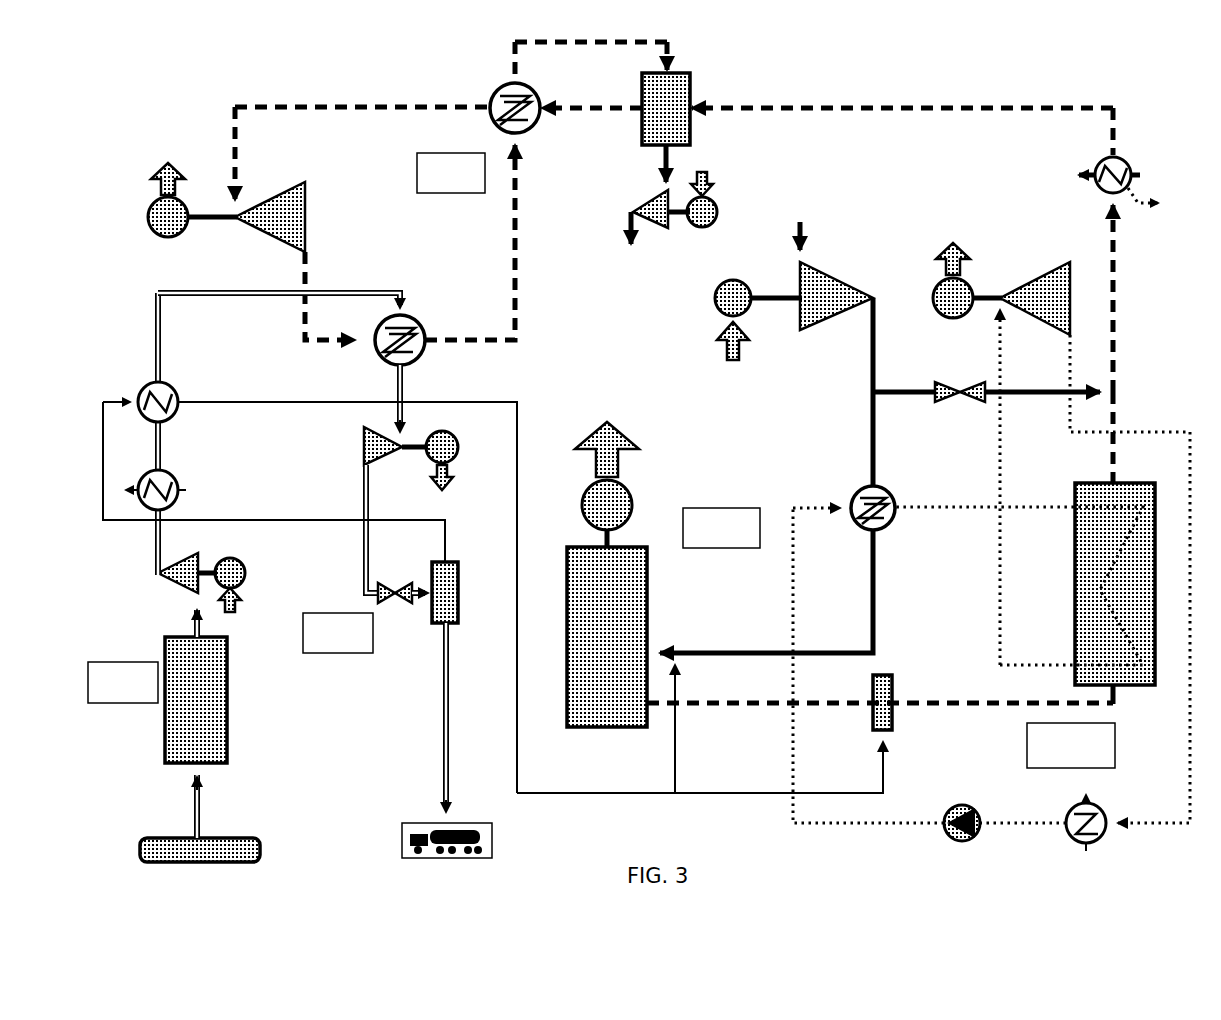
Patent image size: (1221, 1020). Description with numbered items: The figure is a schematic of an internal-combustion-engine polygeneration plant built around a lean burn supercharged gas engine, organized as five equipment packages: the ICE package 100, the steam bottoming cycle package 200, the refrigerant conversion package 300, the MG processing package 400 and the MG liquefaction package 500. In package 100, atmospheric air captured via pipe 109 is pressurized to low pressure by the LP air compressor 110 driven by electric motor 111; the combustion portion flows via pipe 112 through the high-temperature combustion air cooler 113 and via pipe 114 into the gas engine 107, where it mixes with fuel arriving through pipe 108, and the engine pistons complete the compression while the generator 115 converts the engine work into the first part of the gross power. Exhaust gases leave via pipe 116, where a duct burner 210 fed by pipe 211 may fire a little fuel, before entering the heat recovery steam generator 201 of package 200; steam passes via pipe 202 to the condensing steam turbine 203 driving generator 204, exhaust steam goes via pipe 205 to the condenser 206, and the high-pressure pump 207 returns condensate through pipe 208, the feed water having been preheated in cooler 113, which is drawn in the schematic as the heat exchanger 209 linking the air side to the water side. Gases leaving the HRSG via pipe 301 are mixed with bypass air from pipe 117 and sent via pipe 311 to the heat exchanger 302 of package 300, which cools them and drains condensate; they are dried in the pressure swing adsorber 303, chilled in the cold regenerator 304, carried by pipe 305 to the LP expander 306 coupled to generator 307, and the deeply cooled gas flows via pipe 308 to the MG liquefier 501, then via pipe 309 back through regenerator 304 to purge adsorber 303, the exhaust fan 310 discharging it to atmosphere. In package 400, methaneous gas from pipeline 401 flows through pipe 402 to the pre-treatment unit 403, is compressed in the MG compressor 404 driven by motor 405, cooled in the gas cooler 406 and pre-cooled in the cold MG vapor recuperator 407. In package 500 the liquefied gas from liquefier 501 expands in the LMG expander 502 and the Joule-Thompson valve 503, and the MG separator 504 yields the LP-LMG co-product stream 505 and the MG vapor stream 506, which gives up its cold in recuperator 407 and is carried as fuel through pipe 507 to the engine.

The ICE package 100 is at (721, 528).
The gas engine 107 is at (650, 560).
The fuel pipe 108 is at (672, 750).
The air intake pipe 109 is at (803, 252).
The LP air compressor 110 is at (802, 330).
The electric motor 111 is at (716, 310).
The combustion air pipe 112 is at (867, 440).
The high-temperature combustion air cooler 113 is at (853, 502).
The cooled combustion air pipe 114 is at (687, 650).
The generator 115 is at (625, 492).
The exhaust gas pipe 116 is at (751, 707).
The bypass air pipe 117 is at (917, 396).
The steam bottoming cycle package 200 is at (1071, 745).
The heat recovery steam generator 201 is at (1142, 688).
The steam pipe 202 is at (1000, 618).
The condensing steam turbine 203 is at (1042, 280).
The electric generator 204 is at (956, 316).
The exhaust steam pipe 205 is at (1074, 436).
The condenser 206 is at (1099, 808).
The high-pressure pump 207 is at (961, 807).
The condensate pipe 208 is at (792, 823).
The heat exchanger 209 is at (901, 500).
The duct burner 210 is at (893, 686).
The supplementary fuel pipe 211 is at (885, 776).
The refrigerant conversion package 300 is at (451, 173).
The HRSG exhaust pipe 301 is at (1118, 420).
The heat exchanger 302 is at (1128, 160).
The pressure swing adsorber 303 is at (694, 82).
The cold regenerator 304 is at (498, 94).
The chilled gas pipe 305 is at (340, 110).
The LP expander 306 is at (305, 212).
The generator 307 is at (164, 240).
The refrigerant pipe 308 is at (336, 342).
The liquefier exhaust pipe 309 is at (526, 271).
The exhaust fan 310 is at (632, 204).
The LP gaseous stream pipe 311 is at (1120, 290).
The MG processing package 400 is at (123, 682).
The pipeline 401 is at (258, 842).
The MG feed pipe 402 is at (189, 815).
The pre-treatment unit 403 is at (230, 722).
The MG compressor 404 is at (171, 586).
The motor 405 is at (244, 567).
The gas cooler 406 is at (179, 476).
The cold MG vapor recuperator 407 is at (142, 382).
The MG liquefaction package 500 is at (338, 633).
The MG liquefier 501 is at (417, 320).
The LMG expander 502 is at (364, 448).
The Joule-Thompson valve 503 is at (389, 584).
The MG separator 504 is at (458, 620).
The LP-LMG co-product stream 505 is at (446, 702).
The MG vapor stream 506 is at (445, 531).
The fuel pipe 507 is at (516, 402).